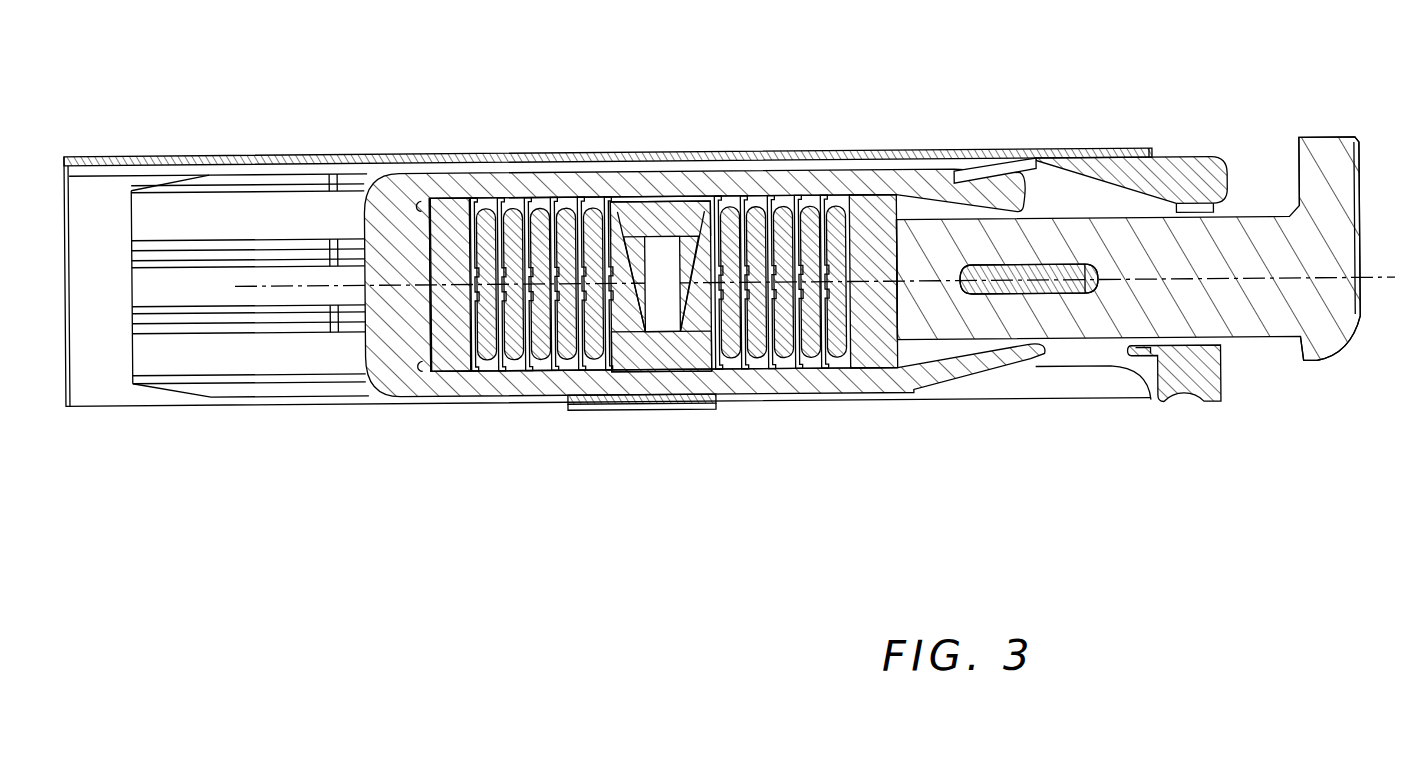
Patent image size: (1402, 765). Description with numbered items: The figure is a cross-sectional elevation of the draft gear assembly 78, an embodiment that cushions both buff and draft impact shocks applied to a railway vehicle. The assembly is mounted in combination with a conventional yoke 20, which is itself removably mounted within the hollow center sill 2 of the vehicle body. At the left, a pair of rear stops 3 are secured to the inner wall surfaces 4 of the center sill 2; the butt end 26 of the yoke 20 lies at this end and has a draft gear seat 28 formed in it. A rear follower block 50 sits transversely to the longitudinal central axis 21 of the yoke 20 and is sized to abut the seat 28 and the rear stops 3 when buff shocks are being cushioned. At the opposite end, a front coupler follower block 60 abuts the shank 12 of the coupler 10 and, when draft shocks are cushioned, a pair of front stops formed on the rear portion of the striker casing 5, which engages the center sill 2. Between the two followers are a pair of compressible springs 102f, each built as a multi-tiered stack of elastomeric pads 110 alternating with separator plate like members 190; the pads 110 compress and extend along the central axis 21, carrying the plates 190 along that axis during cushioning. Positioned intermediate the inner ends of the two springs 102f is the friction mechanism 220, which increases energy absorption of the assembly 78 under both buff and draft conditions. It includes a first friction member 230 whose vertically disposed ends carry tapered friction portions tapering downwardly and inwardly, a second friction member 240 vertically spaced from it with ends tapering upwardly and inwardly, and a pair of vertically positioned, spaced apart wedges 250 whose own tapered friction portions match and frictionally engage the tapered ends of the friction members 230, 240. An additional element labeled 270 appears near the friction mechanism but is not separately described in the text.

The center sill 2 is at (100, 152).
The inner wall surfaces 4 is at (80, 181).
The rear stops 3 is at (130, 304).
The longitudinal central axis 21 is at (234, 283).
The butt end 26 is at (368, 348).
The draft gear seat 28 is at (445, 333).
The compressible springs 102f is at (503, 447).
The rear follower block 50 is at (457, 208).
The front coupler follower block 60 is at (880, 208).
The pads 110 is at (590, 212).
The separator plate like members 190 is at (500, 215).
The friction mechanism 220 is at (679, 314).
The second friction member 240 is at (685, 356).
The insert top bar 270 is at (648, 203).
The first friction member 230 is at (697, 207).
The wedges 250 is at (628, 350).
The yoke 20 is at (940, 178).
The shank 12 is at (930, 322).
The coupler 10 is at (1300, 148).
The striker casing 5 is at (1130, 387).
The draft gear assembly 78 is at (795, 67).